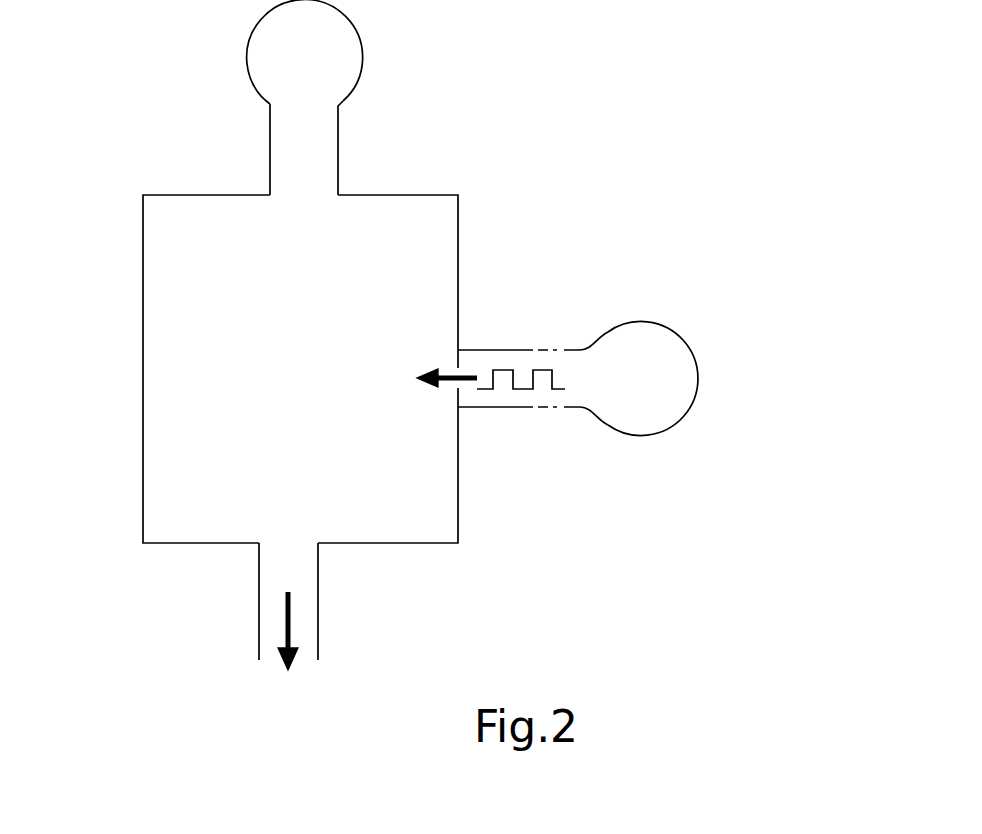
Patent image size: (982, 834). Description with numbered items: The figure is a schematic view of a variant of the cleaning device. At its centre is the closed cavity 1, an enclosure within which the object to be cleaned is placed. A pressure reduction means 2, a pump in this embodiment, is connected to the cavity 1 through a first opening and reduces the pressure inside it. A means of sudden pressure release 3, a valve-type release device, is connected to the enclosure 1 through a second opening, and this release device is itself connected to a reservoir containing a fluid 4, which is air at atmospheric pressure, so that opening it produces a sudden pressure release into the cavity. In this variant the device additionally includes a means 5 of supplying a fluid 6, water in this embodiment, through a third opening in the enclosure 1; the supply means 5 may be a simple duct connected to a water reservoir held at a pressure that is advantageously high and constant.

The closed cavity 1 is at (163, 437).
The pressure reduction means 2 is at (298, 565).
The means of sudden pressure release 3 is at (484, 361).
The fluid 4 is at (655, 405).
The means of supplying a fluid 5 is at (322, 143).
The fluid 6 is at (270, 63).